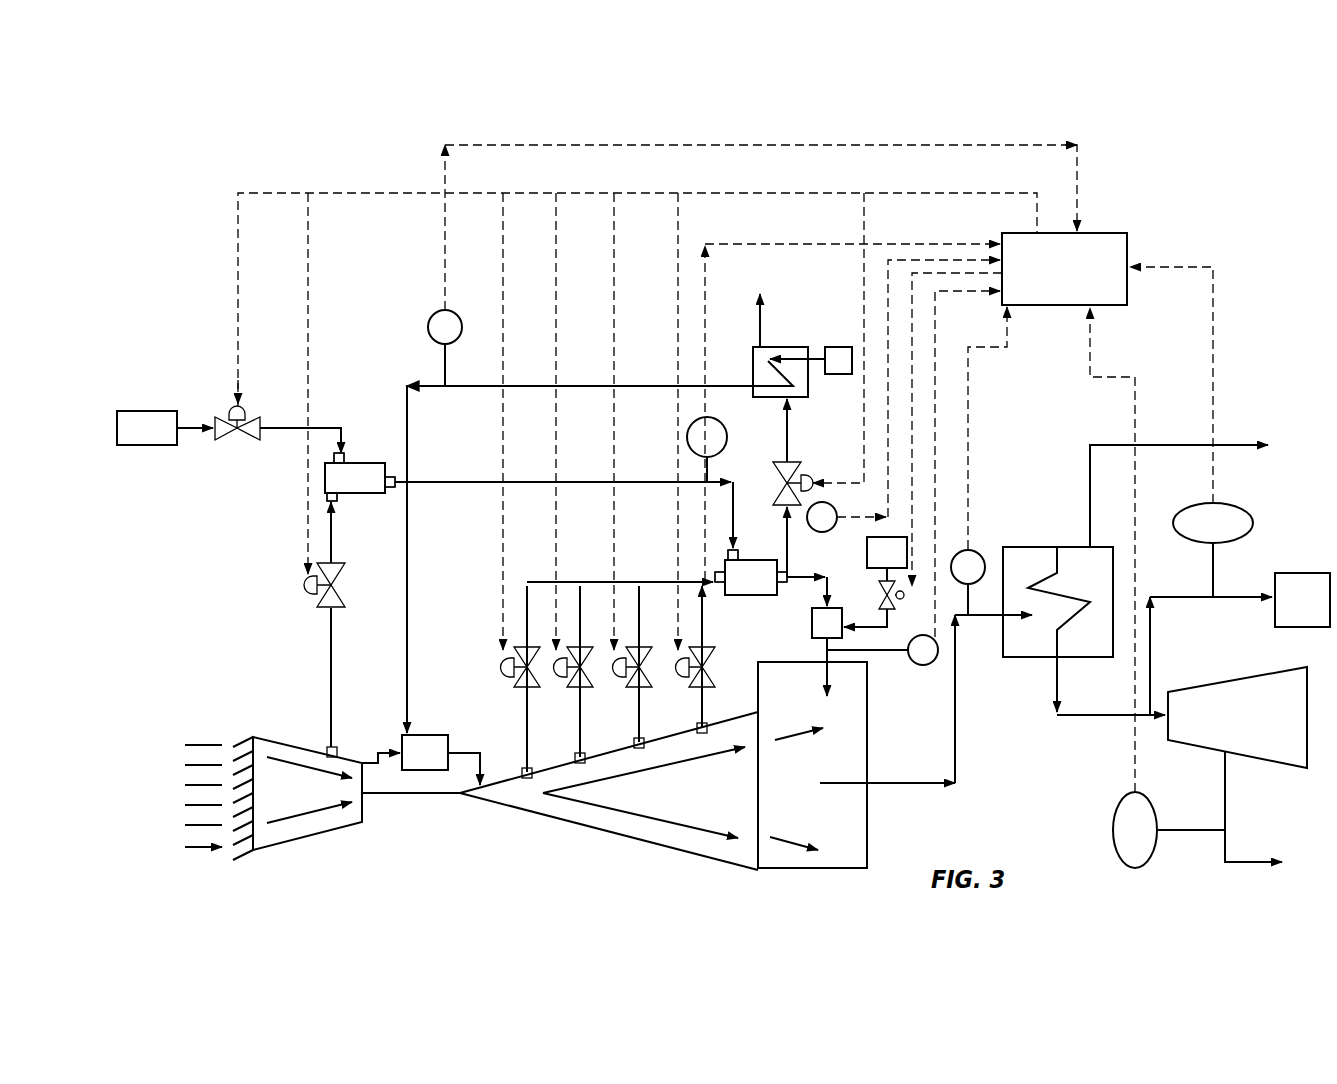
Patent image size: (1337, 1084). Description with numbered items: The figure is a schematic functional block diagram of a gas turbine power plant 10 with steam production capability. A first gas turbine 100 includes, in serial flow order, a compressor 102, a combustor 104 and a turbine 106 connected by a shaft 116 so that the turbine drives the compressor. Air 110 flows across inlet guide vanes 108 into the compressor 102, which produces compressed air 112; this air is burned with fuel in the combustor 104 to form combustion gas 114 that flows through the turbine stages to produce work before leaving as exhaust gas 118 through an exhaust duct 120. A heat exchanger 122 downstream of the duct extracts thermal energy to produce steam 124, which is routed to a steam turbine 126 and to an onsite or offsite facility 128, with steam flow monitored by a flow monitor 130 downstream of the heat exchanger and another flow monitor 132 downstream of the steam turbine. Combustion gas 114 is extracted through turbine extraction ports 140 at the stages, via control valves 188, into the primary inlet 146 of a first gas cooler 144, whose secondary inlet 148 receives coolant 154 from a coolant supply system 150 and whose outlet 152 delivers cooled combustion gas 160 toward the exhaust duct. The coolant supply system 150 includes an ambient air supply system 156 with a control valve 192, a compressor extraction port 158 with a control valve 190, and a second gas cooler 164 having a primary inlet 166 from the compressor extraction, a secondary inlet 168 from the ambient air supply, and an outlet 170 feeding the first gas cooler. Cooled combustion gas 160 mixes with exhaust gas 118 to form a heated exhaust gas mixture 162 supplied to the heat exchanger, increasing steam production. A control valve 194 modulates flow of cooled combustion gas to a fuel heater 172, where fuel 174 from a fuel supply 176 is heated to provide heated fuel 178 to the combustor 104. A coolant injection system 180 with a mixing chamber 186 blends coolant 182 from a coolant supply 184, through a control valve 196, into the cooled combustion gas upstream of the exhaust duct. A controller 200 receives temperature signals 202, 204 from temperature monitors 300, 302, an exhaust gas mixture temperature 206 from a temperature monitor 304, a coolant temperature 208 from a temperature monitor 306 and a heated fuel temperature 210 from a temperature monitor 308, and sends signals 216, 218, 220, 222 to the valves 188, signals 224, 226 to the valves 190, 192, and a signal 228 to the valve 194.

The gas turbine power plant 10 is at (1195, 168).
The first gas turbine 100 is at (388, 872).
The compressor 102 is at (305, 740).
The combustor 104 is at (425, 735).
The turbine 106 is at (600, 840).
The inlet guide vanes 108 is at (245, 860).
The air 110 is at (185, 825).
The compressed air 112 is at (345, 780).
The combustion gas 114 is at (527, 578).
The shaft 116 is at (415, 800).
The exhaust gas 118 is at (793, 735).
The exhaust duct 120 is at (800, 870).
The heat exchanger 122 is at (1020, 660).
The steam 124 is at (1160, 592).
The steam turbine 126 is at (1263, 680).
The onsite or offsite facility 128 is at (1302, 600).
The flow monitor 130 is at (1245, 540).
The flow monitor 132 is at (1112, 832).
The turbine extraction ports 140 is at (708, 718).
The first gas cooler 144 is at (751, 572).
The primary inlet 146 is at (716, 573).
The secondary inlet 148 is at (738, 553).
The coolant supply system 150 is at (232, 464).
The outlet 152 is at (780, 592).
The coolant 154 is at (197, 425).
The ambient air supply system 156 is at (147, 428).
The compressor extraction port 158 is at (340, 748).
The cooled combustion gas 160 is at (760, 303).
The heated exhaust gas mixture 162 is at (1172, 445).
The second gas cooler 164 is at (360, 477).
The primary inlet 166 is at (335, 505).
The secondary inlet 168 is at (345, 455).
The outlet 170 is at (395, 492).
The fuel heater 172 is at (770, 347).
The fuel 174 is at (795, 398).
The fuel supply 176 is at (838, 375).
The heated fuel 178 is at (635, 386).
The coolant injection system 180 is at (905, 525).
The coolant 182 is at (890, 622).
The coolant supply 184 is at (887, 559).
The mixing chamber 186 is at (812, 640).
The control valves 188 is at (505, 658).
The control valve 190 is at (338, 612).
The control valve 192 is at (245, 412).
The control valve 194 is at (806, 472).
The control valve 196 is at (880, 603).
The controller 200 is at (1064, 269).
The combustion gas temperature signal 202 is at (888, 310).
The combustion gas temperature signal 204 is at (937, 425).
The exhaust gas mixture temperature signal 206 is at (968, 447).
The coolant temperature signal 208 is at (745, 244).
The heated fuel temperature signal 210 is at (655, 143).
The control signal 216 is at (503, 268).
The control signal 218 is at (556, 268).
The control signal 220 is at (614, 268).
The control signal 222 is at (678, 268).
The control signal 224 is at (308, 237).
The control signal 226 is at (238, 247).
The control signal 228 is at (864, 232).
The temperature monitor 300 is at (830, 508).
The temperature monitor 302 is at (925, 668).
The temperature monitor 304 is at (972, 563).
The temperature monitor 306 is at (707, 449).
The temperature monitor 308 is at (438, 330).